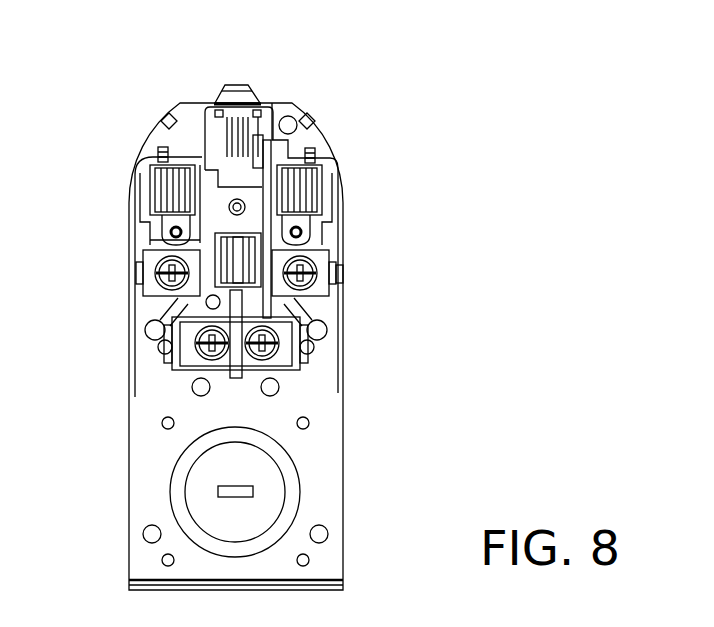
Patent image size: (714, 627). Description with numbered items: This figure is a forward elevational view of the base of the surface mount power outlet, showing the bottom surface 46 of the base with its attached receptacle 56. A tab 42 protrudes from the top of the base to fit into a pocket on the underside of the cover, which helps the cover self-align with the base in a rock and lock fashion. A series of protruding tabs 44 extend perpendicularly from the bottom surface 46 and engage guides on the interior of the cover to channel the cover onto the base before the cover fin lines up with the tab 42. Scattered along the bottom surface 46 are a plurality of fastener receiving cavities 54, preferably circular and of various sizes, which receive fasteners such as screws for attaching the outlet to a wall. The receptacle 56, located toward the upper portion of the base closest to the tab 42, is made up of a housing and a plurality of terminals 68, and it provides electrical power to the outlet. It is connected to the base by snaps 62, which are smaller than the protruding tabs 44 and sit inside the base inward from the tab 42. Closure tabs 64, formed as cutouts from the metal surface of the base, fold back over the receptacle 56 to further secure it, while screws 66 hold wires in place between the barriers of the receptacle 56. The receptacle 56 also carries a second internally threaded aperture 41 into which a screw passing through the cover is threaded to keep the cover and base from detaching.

The second internally threaded aperture 41 is at (229, 205).
The tab 42 is at (237, 85).
The protruding tabs 44 is at (162, 117).
The bottom surface 46 is at (173, 469).
The fastener receiving cavities 54 is at (285, 117).
The receptacle 56 is at (140, 203).
The snaps 62 is at (159, 150).
The closure tabs 64 is at (150, 330).
The screws 66 is at (142, 270).
The terminals 68 is at (157, 188).